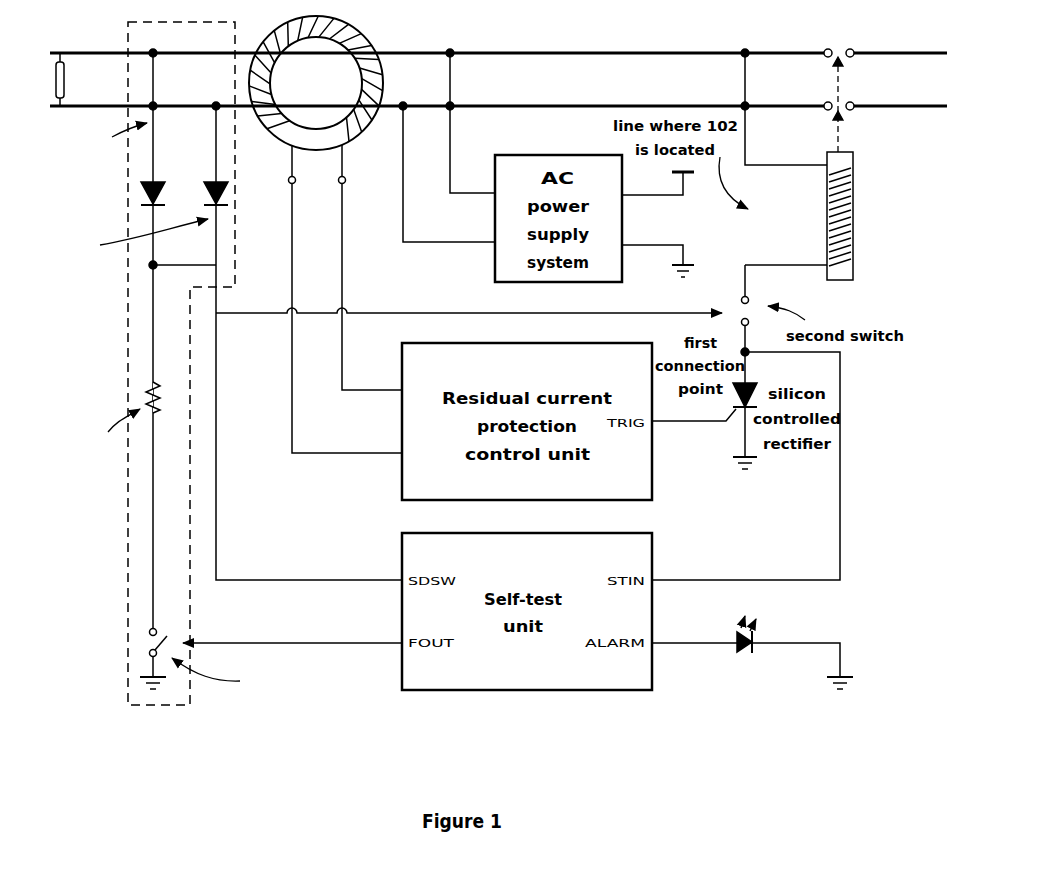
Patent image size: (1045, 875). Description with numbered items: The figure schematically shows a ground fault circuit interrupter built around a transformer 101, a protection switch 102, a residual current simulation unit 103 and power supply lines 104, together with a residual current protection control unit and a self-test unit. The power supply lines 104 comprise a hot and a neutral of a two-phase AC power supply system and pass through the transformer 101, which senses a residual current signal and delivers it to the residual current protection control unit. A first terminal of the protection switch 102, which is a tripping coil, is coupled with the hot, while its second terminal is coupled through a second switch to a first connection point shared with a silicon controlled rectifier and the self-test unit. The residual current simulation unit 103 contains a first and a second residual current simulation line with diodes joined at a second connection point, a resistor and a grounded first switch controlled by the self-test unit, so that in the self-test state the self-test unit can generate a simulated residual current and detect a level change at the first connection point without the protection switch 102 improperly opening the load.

The transformer 101 is at (386, 30).
The protection switch 102 is at (870, 214).
The residual current simulation unit 103 is at (115, 506).
The power supply lines 104 is at (590, 46).